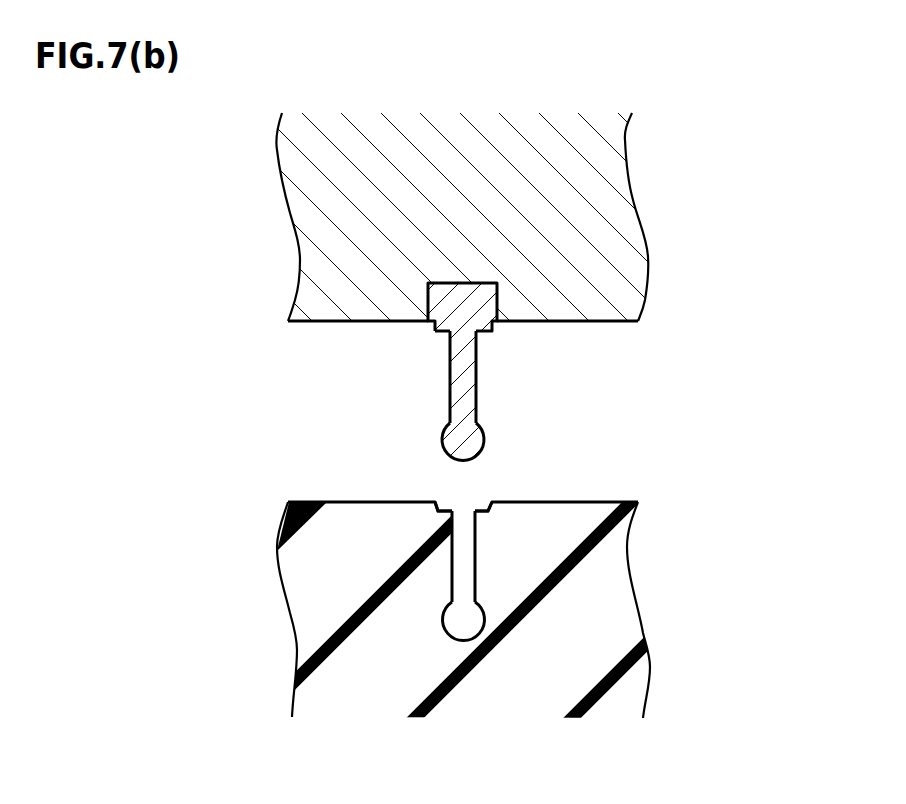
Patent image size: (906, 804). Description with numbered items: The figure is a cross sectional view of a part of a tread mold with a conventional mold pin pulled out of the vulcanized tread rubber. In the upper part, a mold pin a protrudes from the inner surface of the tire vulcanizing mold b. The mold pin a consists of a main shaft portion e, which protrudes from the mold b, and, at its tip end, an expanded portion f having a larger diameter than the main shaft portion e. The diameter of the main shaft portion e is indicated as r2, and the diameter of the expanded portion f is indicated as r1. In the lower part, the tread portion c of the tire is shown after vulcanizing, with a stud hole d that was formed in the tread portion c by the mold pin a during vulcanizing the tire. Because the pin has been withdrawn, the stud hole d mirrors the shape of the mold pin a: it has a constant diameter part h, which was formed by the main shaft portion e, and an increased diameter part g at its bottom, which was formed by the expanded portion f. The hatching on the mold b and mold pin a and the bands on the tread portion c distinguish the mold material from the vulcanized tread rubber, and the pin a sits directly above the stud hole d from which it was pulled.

The tire vulcanizing mold b is at (582, 222).
The mold pin a is at (748, 343).
The main shaft portion e is at (470, 382).
The expanded portion f is at (472, 441).
The stem width dimension r2 is at (417, 363).
The tip diameter dimension r1 is at (442, 452).
The tread portion c is at (357, 513).
The stud hole d is at (748, 535).
The constant diameter part h is at (465, 560).
The increased diameter part g is at (483, 608).